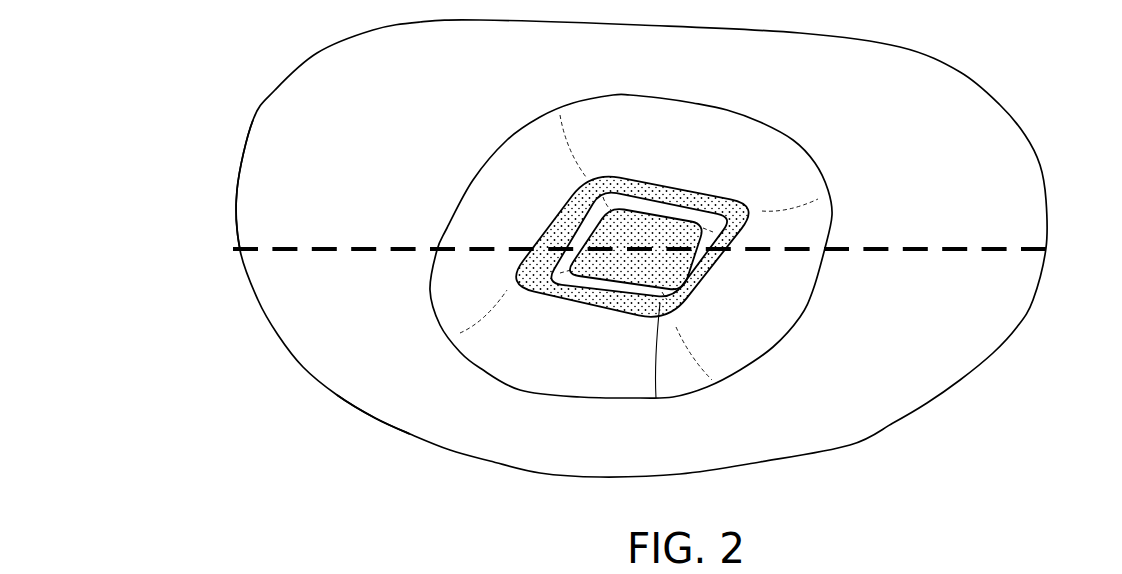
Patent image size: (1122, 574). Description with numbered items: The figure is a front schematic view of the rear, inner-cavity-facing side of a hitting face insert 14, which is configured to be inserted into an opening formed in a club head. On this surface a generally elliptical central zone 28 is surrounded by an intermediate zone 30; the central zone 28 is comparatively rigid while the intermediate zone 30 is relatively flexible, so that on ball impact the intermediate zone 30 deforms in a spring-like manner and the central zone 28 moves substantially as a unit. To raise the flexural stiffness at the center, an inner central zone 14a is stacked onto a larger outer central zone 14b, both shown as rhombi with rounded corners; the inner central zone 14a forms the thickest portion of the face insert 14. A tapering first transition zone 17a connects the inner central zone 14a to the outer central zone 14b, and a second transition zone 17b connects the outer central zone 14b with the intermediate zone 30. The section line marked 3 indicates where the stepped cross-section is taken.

The face insert 14 is at (847, 457).
The inner central zone 14a is at (654, 281).
The outer central zone 14b is at (757, 207).
The first transition zone 17a is at (656, 398).
The second transition zone 17b is at (790, 293).
The central zone 28 is at (458, 138).
The intermediate zone 30 is at (397, 413).
The section line 3- 3 is at (218, 249).